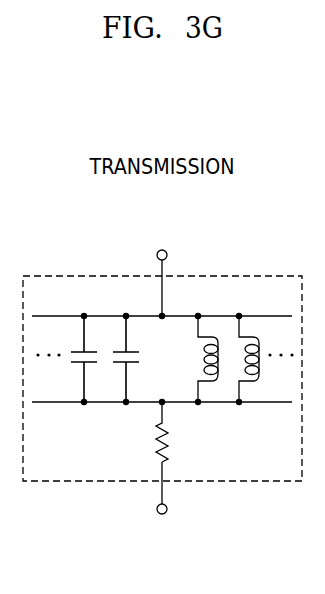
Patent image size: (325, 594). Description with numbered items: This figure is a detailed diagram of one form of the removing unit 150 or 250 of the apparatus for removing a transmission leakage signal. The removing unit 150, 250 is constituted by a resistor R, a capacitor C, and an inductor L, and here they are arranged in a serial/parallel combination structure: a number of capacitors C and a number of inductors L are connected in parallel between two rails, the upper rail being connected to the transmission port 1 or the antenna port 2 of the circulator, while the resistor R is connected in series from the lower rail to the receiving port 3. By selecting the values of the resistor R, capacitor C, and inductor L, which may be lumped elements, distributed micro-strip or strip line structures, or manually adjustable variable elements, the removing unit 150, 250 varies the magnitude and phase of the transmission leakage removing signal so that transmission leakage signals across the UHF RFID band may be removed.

The removing unit 150 is at (162, 277).
The removing unit 250 is at (168, 145).
The transmission port 1 is at (162, 248).
The antenna port 2 is at (162, 248).
The receiving port 3 is at (162, 519).
The capacitor C is at (102, 375).
The inductor L is at (230, 375).
The resistor R is at (172, 432).